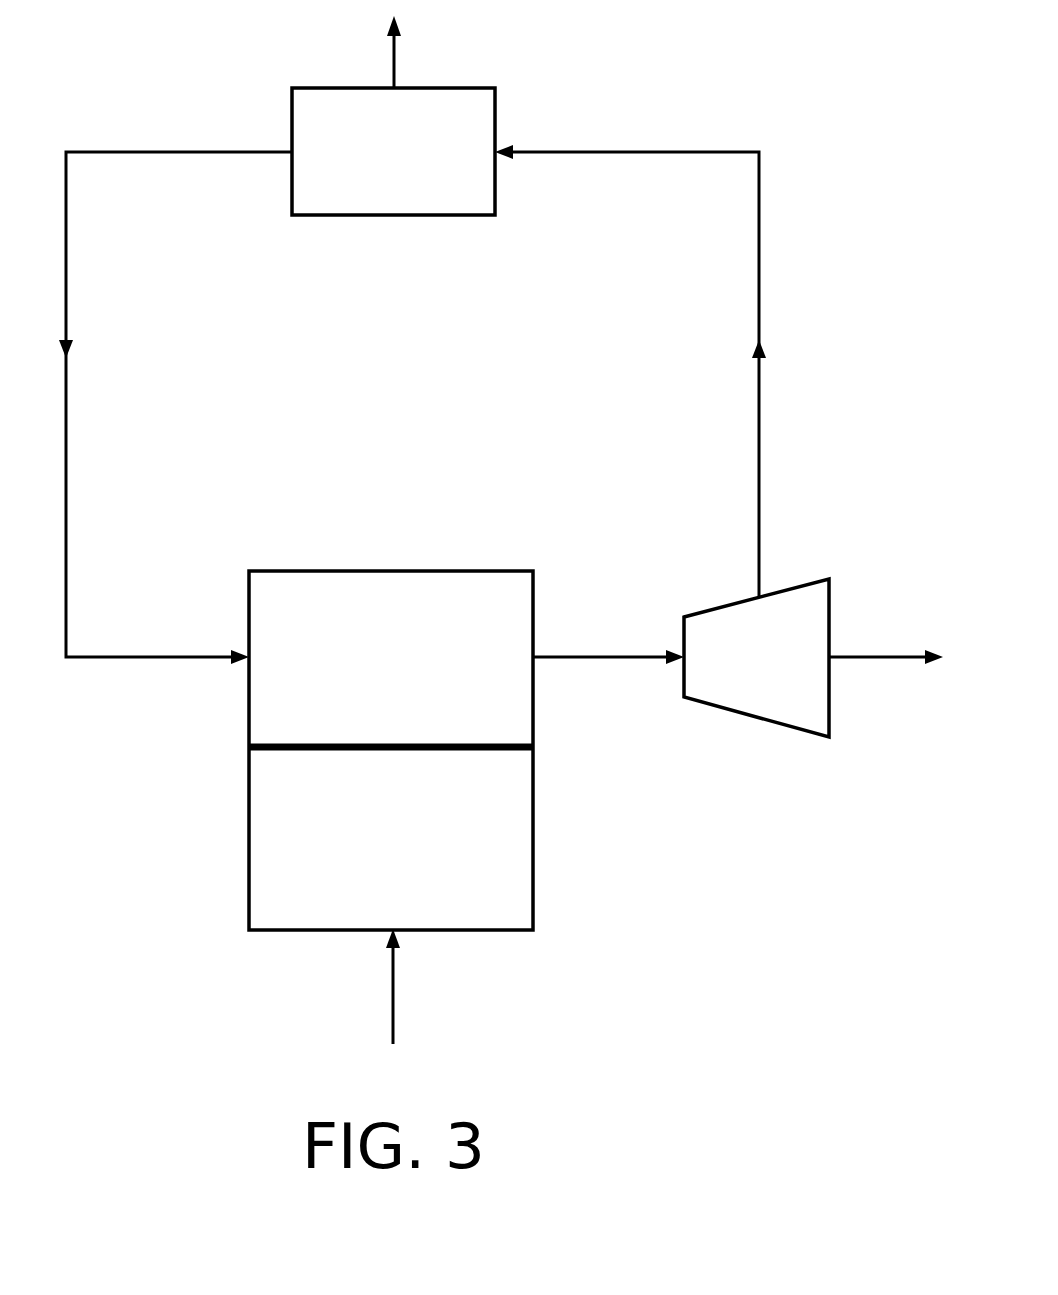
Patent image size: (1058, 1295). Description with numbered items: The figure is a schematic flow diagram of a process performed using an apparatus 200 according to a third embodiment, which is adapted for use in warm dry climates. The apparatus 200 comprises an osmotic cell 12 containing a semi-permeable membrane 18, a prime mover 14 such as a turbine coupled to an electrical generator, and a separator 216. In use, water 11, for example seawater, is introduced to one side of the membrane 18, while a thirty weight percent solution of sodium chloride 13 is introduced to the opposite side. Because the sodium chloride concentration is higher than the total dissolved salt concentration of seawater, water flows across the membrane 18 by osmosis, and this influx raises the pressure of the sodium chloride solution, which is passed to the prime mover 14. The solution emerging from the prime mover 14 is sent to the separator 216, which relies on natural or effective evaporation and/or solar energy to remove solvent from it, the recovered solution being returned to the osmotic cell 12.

The separator 216 is at (505, 103).
The solution of sodium chloride 13 is at (108, 657).
The osmotic cell 12 is at (316, 571).
The semi-permeable membrane 18 is at (249, 747).
The water 11 is at (393, 993).
The prime mover 14 is at (768, 722).
The apparatus 200 is at (751, 924).